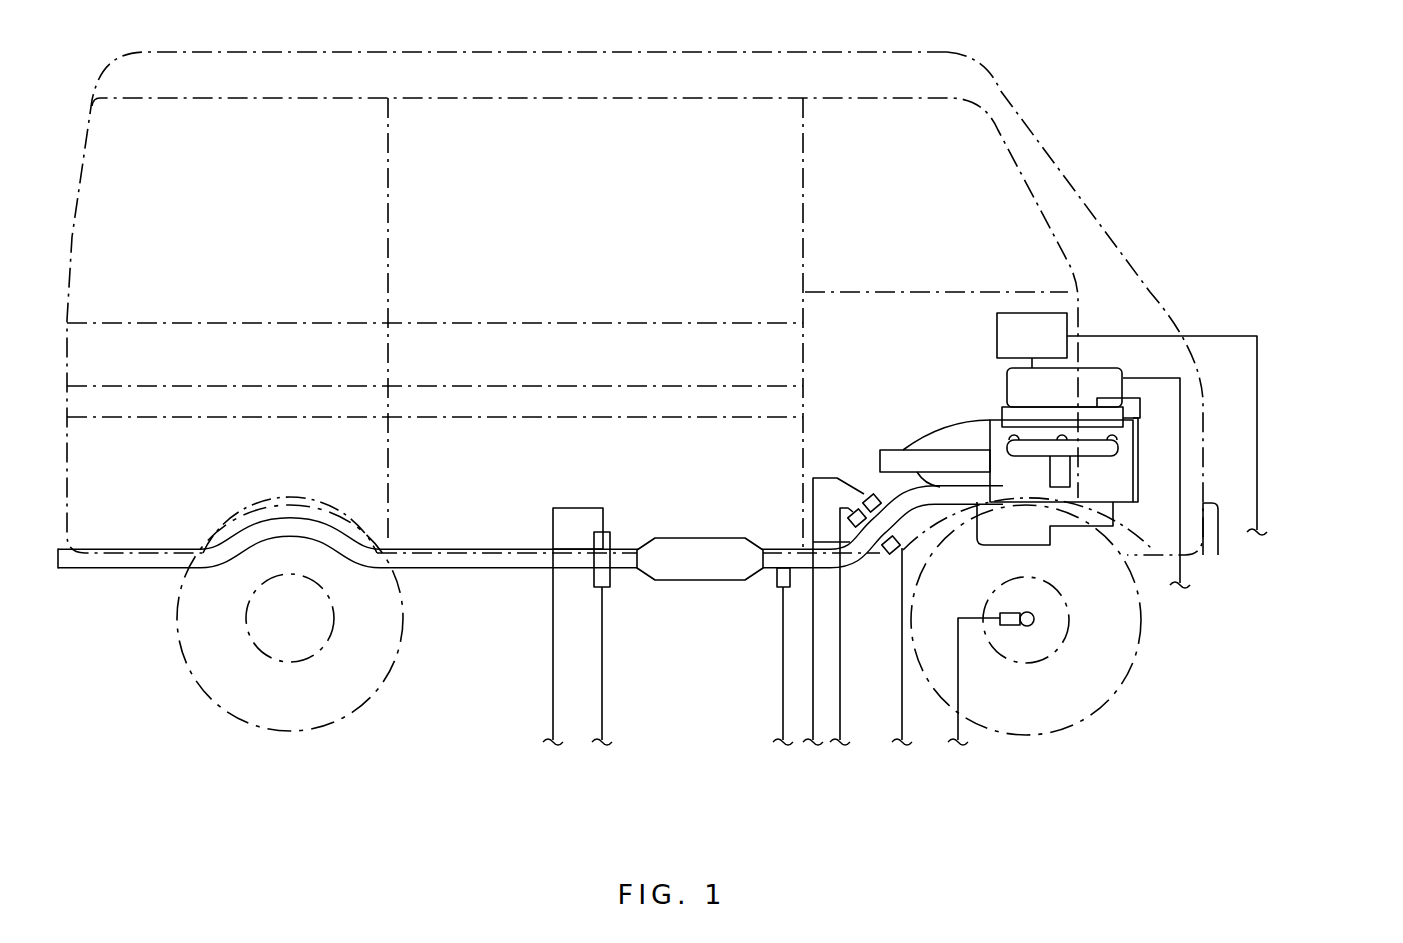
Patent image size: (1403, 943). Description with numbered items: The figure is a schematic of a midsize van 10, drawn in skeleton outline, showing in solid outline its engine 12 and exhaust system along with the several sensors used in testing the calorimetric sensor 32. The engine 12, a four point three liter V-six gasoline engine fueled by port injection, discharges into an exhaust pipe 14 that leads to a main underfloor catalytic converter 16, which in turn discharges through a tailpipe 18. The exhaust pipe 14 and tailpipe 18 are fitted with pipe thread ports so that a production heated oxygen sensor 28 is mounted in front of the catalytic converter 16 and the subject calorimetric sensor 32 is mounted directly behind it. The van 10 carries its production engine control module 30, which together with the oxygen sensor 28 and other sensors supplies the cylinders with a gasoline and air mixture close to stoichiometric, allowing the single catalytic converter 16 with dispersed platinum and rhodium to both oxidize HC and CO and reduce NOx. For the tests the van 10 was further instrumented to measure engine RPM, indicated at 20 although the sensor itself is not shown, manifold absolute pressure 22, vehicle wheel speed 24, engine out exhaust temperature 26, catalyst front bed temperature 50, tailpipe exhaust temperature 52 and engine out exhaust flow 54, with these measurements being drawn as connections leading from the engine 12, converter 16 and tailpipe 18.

The midsize van 10 is at (1072, 180).
The engine 12 is at (1000, 413).
The exhaust pipe 14 is at (897, 502).
The catalytic converter 16 is at (690, 537).
The tailpipe 18 is at (487, 562).
The engine RPM sensor 20 is at (1257, 458).
The manifold absolute pressure sensor 22 is at (1182, 575).
The vehicle wheel speed sensor 24 is at (960, 723).
The engine out exhaust temperature sensor 26 is at (840, 700).
The oxygen sensor 28 is at (810, 645).
The engine control module 30 is at (1075, 320).
The calorimetric sensor 32 is at (603, 698).
The catalyst front bed temperature sensor 50 is at (780, 697).
The tailpipe exhaust temperature sensor 52 is at (553, 700).
The engine out exhaust flow sensor 54 is at (902, 717).